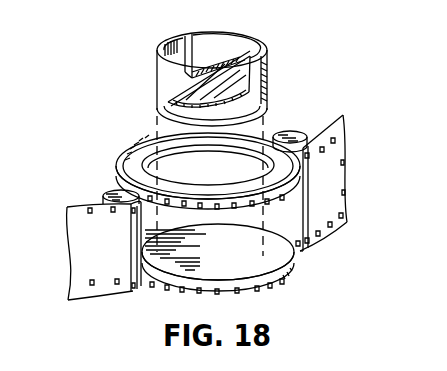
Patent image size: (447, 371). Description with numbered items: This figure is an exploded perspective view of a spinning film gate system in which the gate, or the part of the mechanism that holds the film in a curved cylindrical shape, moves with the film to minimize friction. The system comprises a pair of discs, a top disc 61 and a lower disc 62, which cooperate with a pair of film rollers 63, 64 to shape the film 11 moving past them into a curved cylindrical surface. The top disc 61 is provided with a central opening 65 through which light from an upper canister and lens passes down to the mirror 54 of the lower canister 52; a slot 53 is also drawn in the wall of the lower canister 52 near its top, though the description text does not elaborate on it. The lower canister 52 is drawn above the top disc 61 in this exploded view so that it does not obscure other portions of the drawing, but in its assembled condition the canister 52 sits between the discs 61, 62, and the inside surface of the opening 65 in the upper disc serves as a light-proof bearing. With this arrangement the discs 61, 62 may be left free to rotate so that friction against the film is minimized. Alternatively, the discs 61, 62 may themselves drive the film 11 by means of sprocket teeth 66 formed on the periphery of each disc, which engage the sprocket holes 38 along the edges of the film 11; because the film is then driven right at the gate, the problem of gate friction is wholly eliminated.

The film 11 is at (310, 169).
The sprocket holes 38 is at (322, 153).
The lower canister 52 is at (263, 80).
The slot 53 is at (182, 37).
The mirror 54 is at (172, 97).
The top disc 61 is at (209, 213).
The disc 62 is at (262, 285).
The film roller 63 is at (109, 193).
The film roller 64 is at (295, 140).
The central opening 65 is at (200, 148).
The sprocket teeth 66 is at (196, 282).